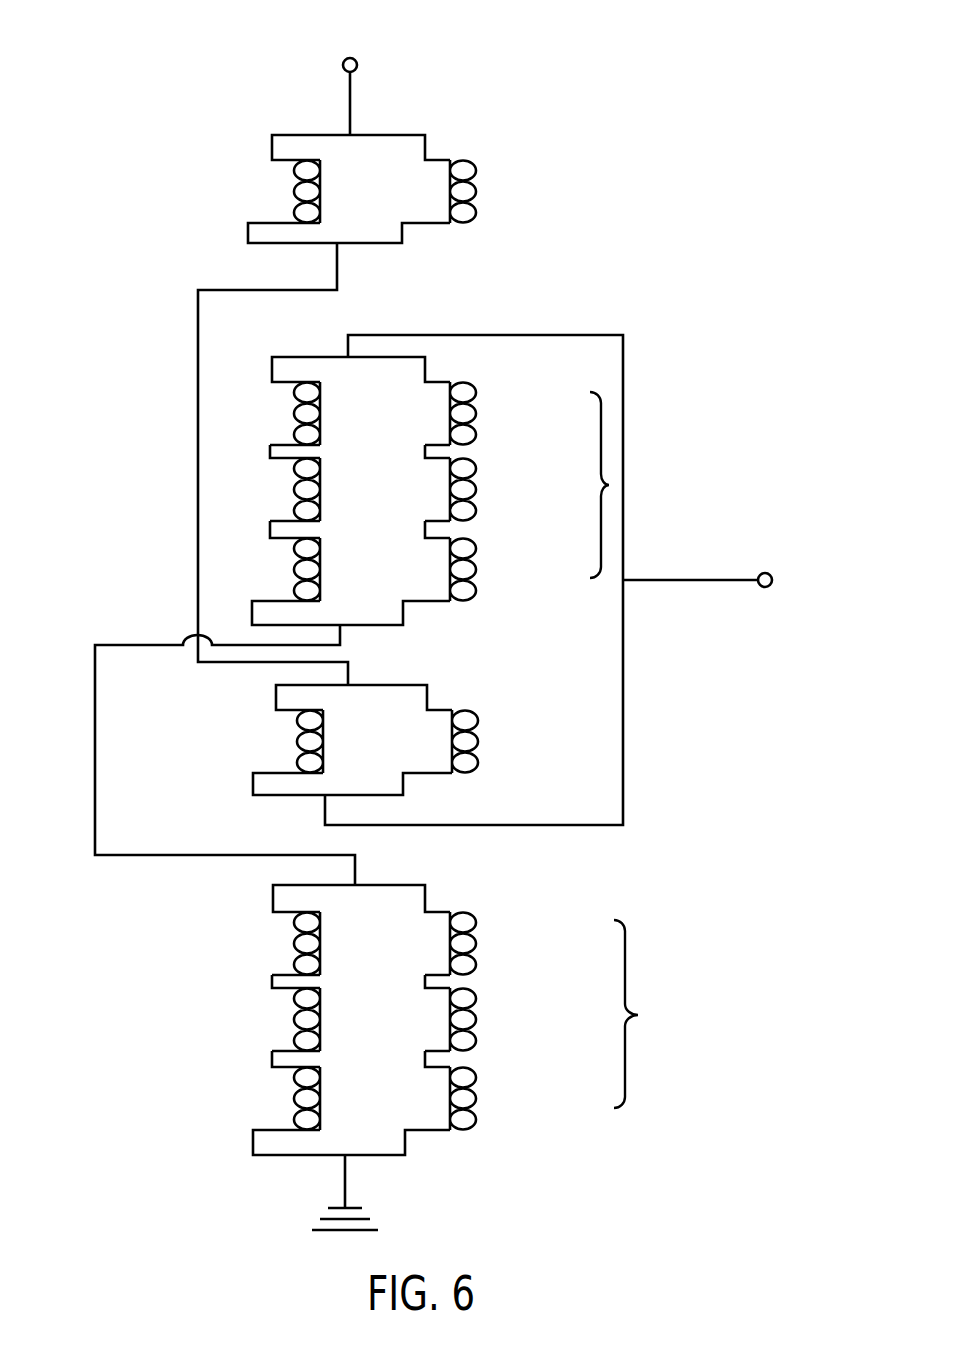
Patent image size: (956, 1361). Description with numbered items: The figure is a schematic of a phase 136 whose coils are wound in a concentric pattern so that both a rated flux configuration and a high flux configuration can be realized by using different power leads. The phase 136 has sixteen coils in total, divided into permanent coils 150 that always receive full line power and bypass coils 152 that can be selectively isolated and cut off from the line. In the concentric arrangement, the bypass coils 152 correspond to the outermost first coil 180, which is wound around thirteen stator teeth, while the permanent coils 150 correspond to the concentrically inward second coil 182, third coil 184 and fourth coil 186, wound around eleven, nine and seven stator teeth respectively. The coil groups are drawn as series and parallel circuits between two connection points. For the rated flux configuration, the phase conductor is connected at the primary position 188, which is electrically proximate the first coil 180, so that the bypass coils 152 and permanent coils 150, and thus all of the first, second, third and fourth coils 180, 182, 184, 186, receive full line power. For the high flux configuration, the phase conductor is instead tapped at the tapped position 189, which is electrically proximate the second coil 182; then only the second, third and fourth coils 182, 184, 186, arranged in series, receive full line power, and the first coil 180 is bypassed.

The phase 136 is at (134, 88).
The primary position 188 is at (357, 64).
The tapped position 189 is at (766, 571).
The bypass coils 152 is at (484, 444).
The fourth coil 186 is at (484, 444).
The third coil 184 is at (280, 408).
The second coil 182 is at (283, 492).
The first coil 180 is at (282, 570).
The permanent coils 150 is at (609, 485).